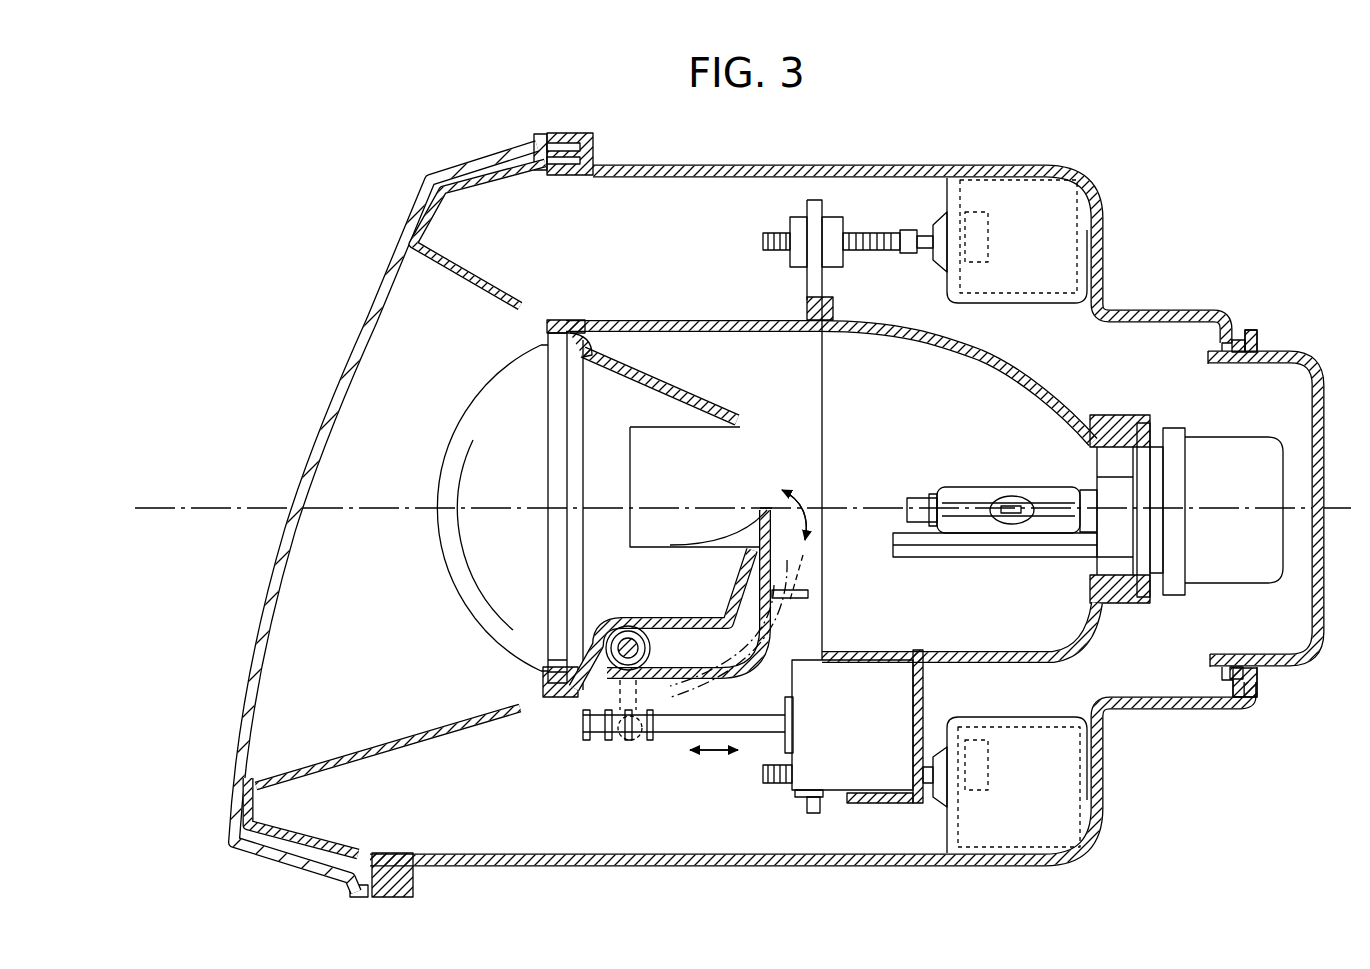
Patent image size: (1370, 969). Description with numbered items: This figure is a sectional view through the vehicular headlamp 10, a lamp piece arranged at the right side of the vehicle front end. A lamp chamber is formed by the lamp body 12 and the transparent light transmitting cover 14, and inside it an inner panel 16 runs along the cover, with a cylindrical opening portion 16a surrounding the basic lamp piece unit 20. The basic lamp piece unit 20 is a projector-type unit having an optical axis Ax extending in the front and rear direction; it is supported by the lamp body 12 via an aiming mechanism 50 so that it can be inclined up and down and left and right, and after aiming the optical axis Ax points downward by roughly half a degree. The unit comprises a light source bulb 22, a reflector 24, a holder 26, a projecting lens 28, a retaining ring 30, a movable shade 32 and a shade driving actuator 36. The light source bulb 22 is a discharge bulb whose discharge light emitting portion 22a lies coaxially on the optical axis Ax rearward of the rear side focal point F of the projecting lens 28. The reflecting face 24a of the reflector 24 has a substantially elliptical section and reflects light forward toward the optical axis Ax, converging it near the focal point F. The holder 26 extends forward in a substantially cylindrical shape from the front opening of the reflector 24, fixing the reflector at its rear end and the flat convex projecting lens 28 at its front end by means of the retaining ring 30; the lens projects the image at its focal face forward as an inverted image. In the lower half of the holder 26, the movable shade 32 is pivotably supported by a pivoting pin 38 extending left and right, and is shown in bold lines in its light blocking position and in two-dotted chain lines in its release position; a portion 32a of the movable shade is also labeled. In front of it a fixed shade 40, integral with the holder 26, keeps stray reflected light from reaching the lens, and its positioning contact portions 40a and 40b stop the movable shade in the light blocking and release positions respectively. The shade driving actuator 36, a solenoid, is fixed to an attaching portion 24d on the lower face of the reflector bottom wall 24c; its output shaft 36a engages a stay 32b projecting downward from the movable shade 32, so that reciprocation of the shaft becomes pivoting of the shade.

The vehicular headlamp 10 is at (368, 190).
The lamp body 12 is at (1108, 236).
The light transmitting cover 14 is at (368, 283).
The inner panel 16 is at (236, 798).
The cylindrical opening portion 16a is at (393, 740).
The basic lamp piece unit 20 is at (398, 405).
The light source bulb 22 is at (963, 483).
The discharge light emitting portion 22a is at (1017, 505).
The reflector 24 is at (1072, 387).
The reflecting face 24a is at (1023, 377).
The bottom wall 24c is at (995, 668).
The attaching portion 24d is at (875, 803).
The holder 26 is at (767, 507).
The projecting lens 28 is at (440, 566).
The retaining ring 30 is at (540, 325).
The movable shade 32 is at (777, 547).
The pivot support portion 32a is at (768, 505).
The stay 32b is at (628, 683).
The shade driving actuator 36 is at (925, 690).
The output shaft 36a is at (686, 725).
The pivoting pin 38 is at (652, 645).
The fixed shade 40 is at (730, 593).
The positioning contact portion 40a is at (745, 635).
The positioning contact portion 40b is at (598, 652).
The aiming mechanism 50 is at (727, 222).
The rear side focal point F is at (660, 318).
The optical axis Ax is at (207, 503).